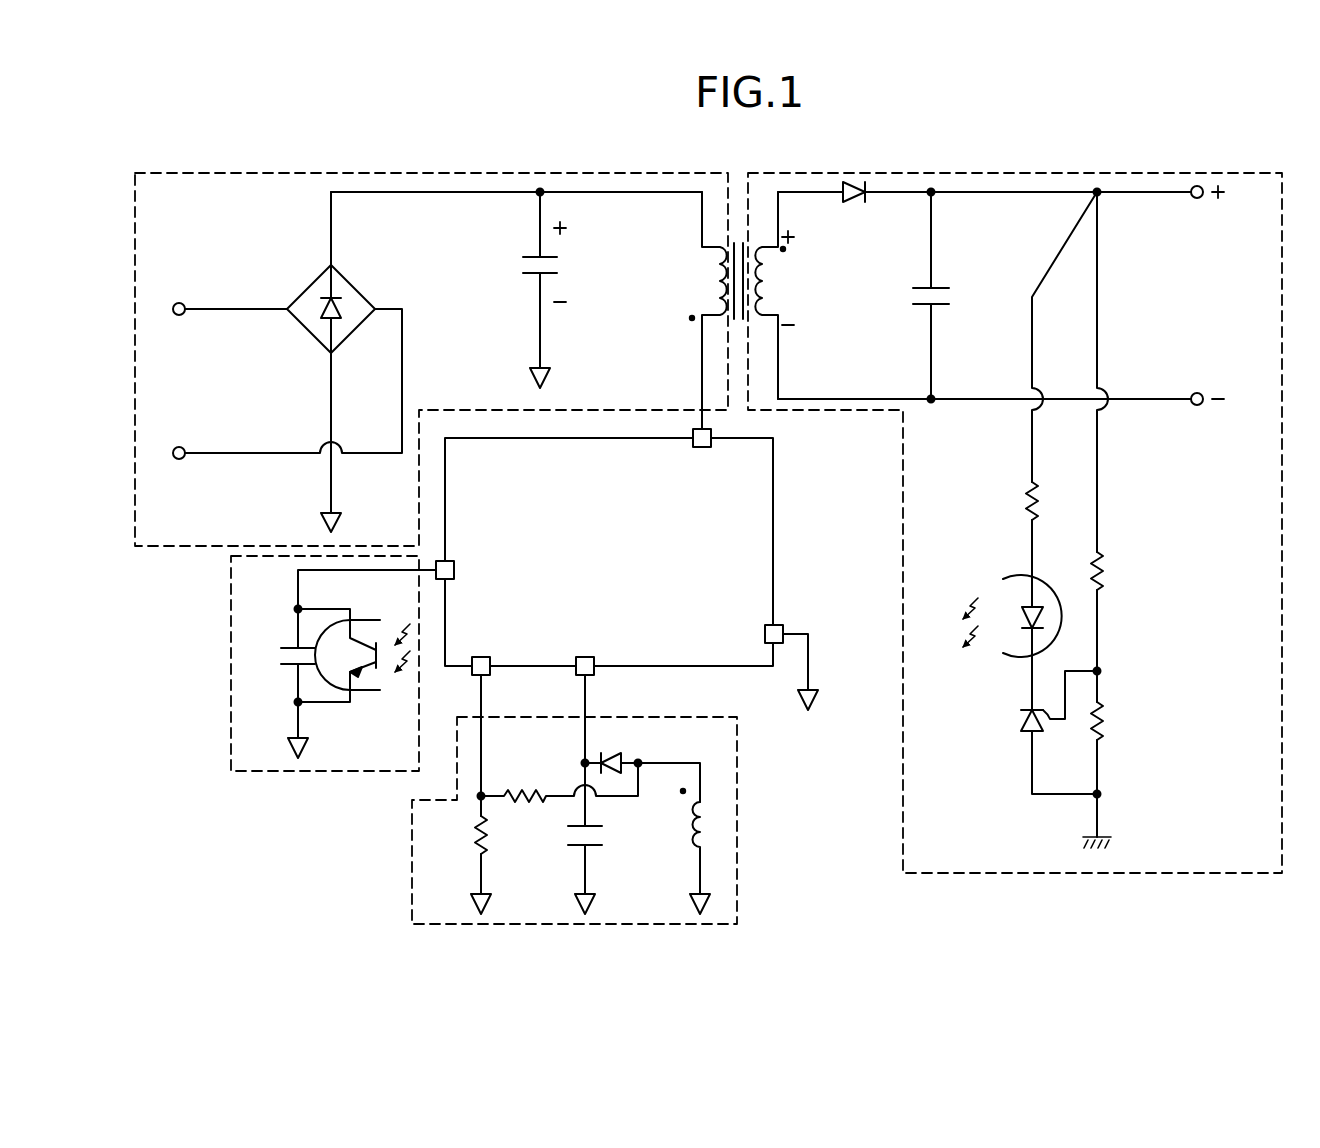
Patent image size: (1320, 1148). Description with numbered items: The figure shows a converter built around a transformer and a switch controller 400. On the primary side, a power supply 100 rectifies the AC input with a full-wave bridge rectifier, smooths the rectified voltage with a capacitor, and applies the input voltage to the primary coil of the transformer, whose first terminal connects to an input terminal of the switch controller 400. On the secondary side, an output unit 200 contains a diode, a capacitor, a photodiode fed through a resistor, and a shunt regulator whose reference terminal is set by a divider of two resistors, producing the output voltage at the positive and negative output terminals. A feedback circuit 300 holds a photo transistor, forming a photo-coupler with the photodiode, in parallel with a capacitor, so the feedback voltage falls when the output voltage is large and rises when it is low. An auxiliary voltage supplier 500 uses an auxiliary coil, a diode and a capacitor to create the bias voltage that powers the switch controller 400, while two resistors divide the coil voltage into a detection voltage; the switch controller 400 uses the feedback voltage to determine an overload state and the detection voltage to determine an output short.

The power supply 100 is at (588, 173).
The output unit 200 is at (994, 173).
The feedback circuit 300 is at (231, 705).
The switch controller 400 is at (773, 547).
The auxiliary voltage supplier 500 is at (737, 822).